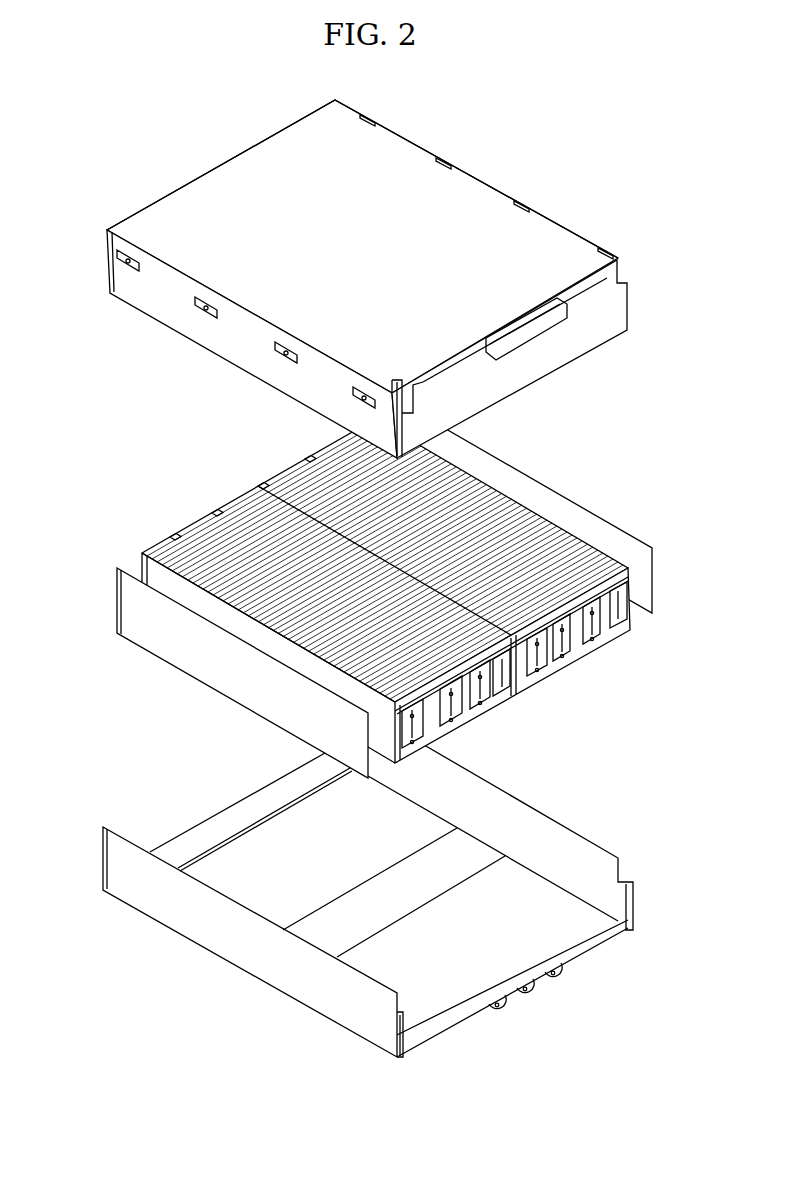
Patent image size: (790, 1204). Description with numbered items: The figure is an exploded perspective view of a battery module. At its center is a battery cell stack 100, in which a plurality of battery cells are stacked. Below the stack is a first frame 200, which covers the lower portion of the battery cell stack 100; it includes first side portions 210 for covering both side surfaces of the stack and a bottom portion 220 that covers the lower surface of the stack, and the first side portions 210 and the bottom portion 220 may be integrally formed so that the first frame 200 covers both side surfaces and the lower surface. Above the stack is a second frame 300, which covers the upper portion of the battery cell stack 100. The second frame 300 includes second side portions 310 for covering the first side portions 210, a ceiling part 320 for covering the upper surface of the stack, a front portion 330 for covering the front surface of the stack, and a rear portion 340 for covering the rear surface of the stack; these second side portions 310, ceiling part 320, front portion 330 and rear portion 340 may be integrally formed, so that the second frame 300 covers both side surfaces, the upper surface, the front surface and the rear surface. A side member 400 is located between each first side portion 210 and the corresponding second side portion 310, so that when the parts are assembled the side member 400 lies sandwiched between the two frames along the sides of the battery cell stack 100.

The battery cell stack 100 is at (213, 510).
The first frame 200 is at (362, 892).
The first side portions 210 is at (447, 787).
The bottom portion 220 is at (518, 970).
The second frame 300 is at (381, 267).
The second side portions 310 is at (200, 335).
The ceiling part 320 is at (550, 250).
The front portion 330 is at (568, 349).
The rear portion 340 is at (216, 168).
The side member 400 is at (620, 528).